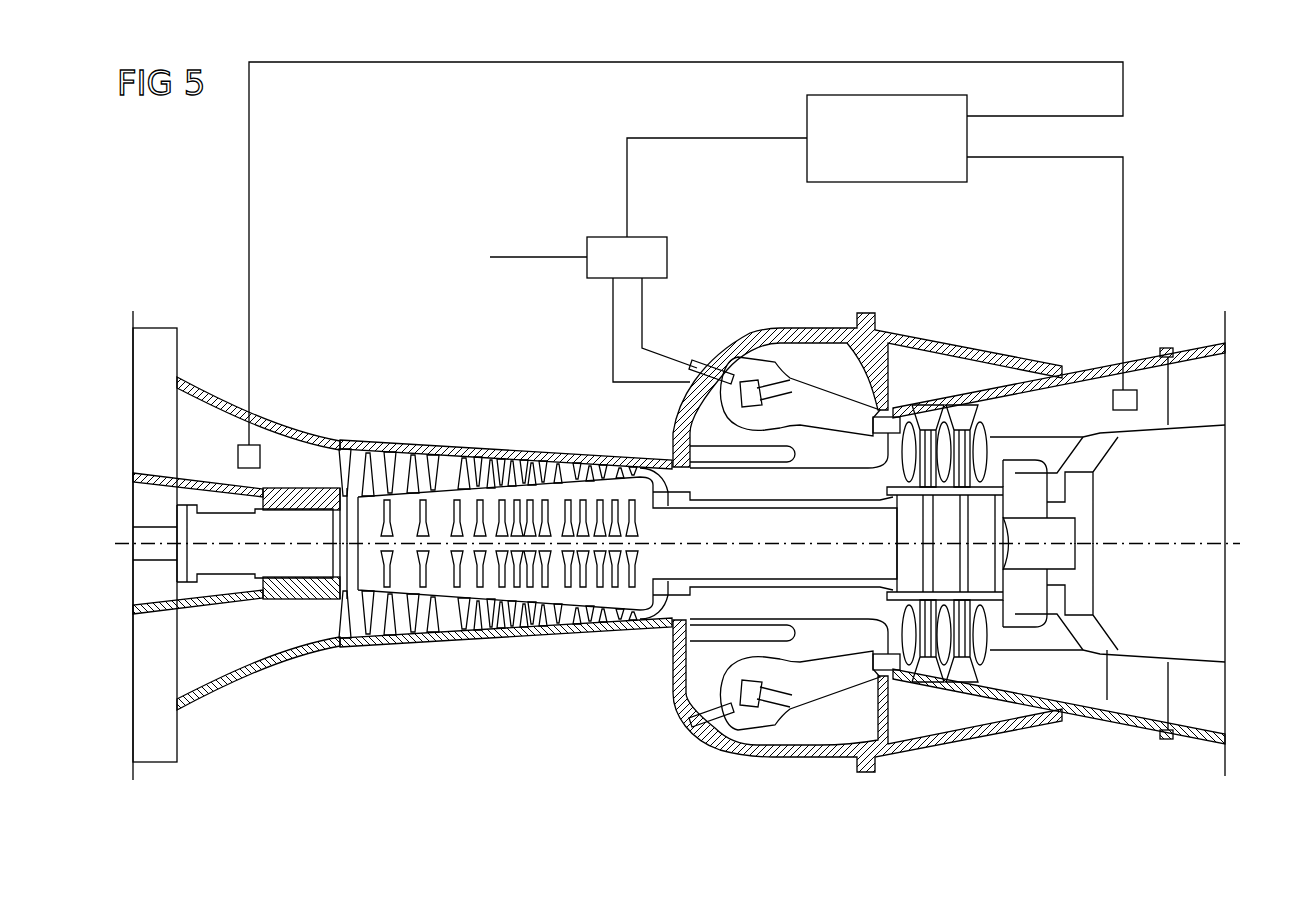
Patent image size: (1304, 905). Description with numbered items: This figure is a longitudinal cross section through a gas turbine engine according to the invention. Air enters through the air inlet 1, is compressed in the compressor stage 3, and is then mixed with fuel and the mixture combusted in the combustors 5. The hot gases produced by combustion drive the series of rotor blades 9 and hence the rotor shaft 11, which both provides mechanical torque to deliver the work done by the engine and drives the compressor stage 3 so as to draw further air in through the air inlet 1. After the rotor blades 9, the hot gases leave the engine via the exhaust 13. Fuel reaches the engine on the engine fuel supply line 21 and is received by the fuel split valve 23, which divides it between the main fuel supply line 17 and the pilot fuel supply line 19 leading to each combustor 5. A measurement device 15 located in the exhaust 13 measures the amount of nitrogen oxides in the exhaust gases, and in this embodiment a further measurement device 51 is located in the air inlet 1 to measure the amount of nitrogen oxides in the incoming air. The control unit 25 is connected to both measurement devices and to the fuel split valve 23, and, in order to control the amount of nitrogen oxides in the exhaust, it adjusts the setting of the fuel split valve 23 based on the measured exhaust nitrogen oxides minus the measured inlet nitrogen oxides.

The air inlet 1 is at (170, 338).
The compressor stage 3 is at (504, 425).
The combustors 5 is at (810, 397).
The rotor blades 9 is at (946, 425).
The rotor shaft 11 is at (672, 560).
The exhaust 13 is at (1200, 380).
The measurement device 15 is at (1113, 400).
The main fuel supply line 17 is at (668, 358).
The pilot fuel supply line 19 is at (643, 383).
The engine fuel supply line 21 is at (530, 257).
The fuel split valve 23 is at (668, 257).
The control unit 25 is at (888, 183).
The measurement device 51 is at (262, 455).